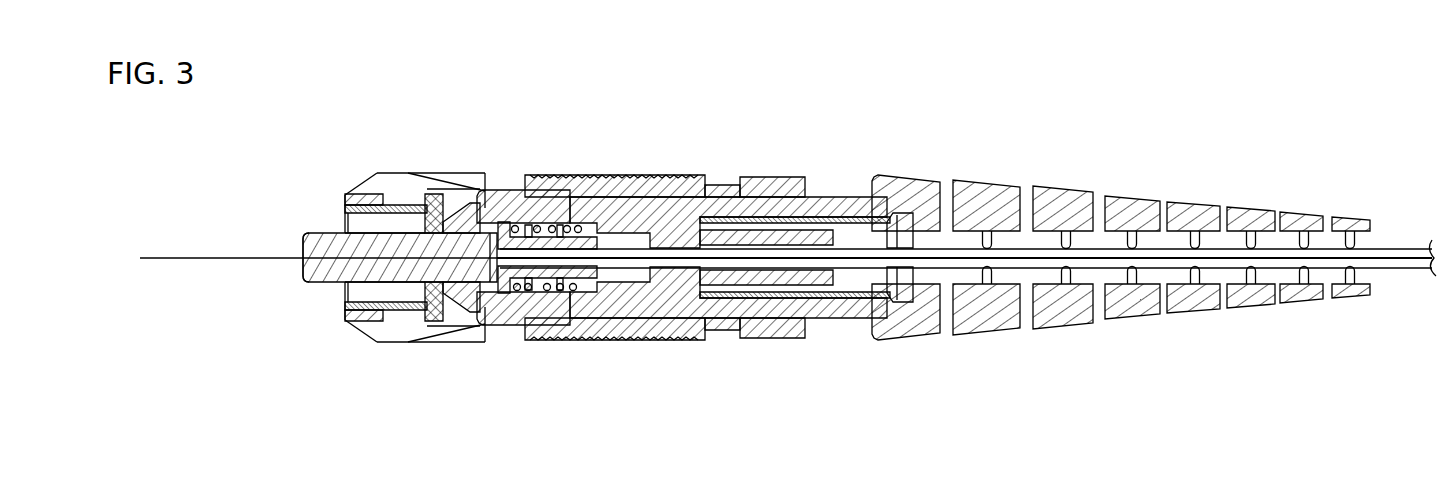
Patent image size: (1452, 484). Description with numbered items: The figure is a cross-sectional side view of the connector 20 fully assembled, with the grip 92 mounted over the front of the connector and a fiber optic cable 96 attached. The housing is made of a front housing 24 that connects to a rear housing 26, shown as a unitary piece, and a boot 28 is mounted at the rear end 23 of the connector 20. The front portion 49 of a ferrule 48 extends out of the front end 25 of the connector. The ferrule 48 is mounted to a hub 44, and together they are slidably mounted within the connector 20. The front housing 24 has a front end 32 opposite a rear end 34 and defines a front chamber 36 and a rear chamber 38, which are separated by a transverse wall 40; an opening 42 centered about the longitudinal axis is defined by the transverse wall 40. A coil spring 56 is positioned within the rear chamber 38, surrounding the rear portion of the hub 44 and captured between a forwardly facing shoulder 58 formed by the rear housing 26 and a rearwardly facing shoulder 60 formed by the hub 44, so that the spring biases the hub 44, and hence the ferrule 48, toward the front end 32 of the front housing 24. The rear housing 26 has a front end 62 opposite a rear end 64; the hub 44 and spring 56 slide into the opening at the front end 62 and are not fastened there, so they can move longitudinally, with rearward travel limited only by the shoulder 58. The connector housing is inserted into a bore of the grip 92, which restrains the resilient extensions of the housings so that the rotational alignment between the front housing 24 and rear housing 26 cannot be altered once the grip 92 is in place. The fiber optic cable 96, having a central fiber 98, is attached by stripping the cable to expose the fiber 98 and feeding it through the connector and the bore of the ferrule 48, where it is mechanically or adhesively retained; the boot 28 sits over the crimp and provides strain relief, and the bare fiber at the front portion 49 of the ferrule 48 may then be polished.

The connector 20 is at (616, 144).
The rear end 23 is at (829, 353).
The front housing 24 is at (500, 198).
The front end 25 is at (330, 319).
The rear housing 26 is at (673, 212).
The boot 28 is at (923, 188).
The front end 32 is at (347, 308).
The rear end 34 is at (635, 317).
The front chamber 36 is at (370, 303).
The rear chamber 38 is at (562, 228).
The transverse wall 40 is at (447, 283).
The opening 42 is at (445, 232).
The hub 44 is at (470, 228).
The ferrule 48 is at (313, 233).
The front portion 49 is at (305, 241).
The coil spring 56 is at (538, 226).
The forwardly facing shoulder 58 is at (582, 290).
The rearwardly facing shoulder 60 is at (513, 286).
The front end 62 is at (477, 222).
The rear end 64 is at (832, 243).
The grip 92 is at (617, 183).
The fiber optic cable 96 is at (1408, 250).
The central fiber 98 is at (162, 257).